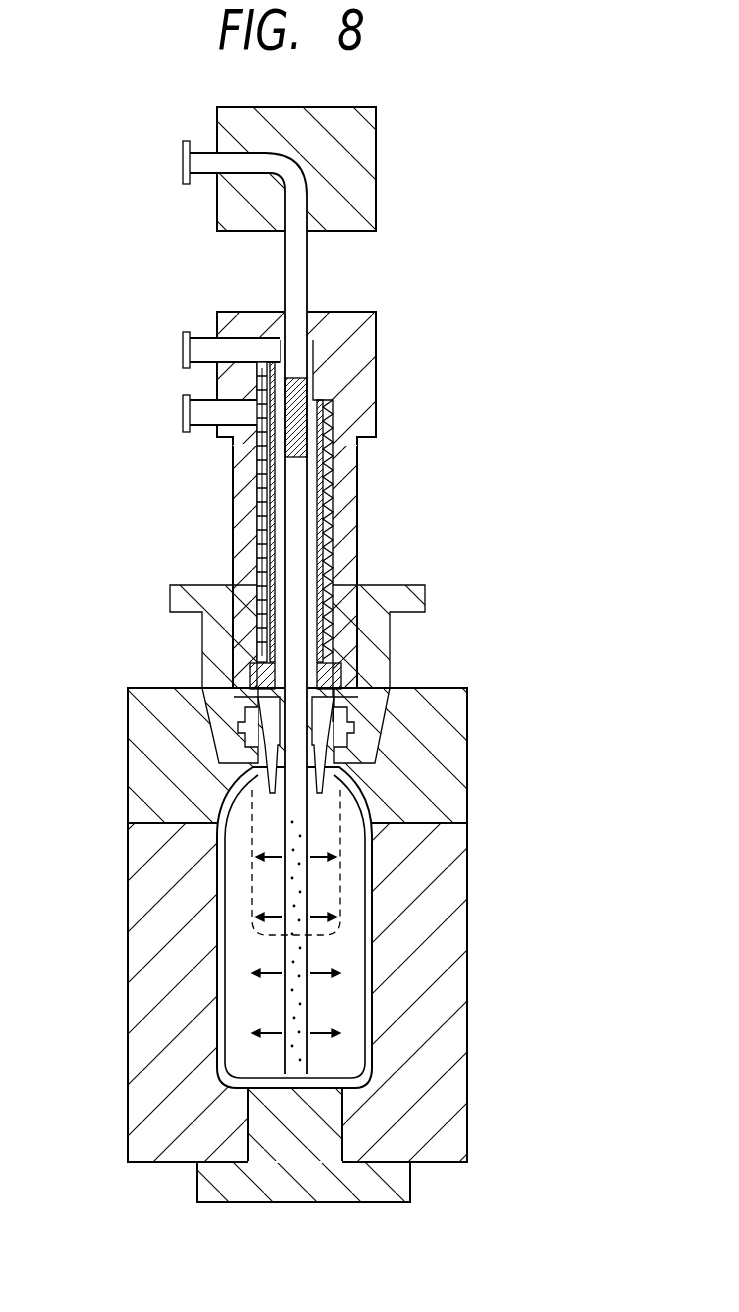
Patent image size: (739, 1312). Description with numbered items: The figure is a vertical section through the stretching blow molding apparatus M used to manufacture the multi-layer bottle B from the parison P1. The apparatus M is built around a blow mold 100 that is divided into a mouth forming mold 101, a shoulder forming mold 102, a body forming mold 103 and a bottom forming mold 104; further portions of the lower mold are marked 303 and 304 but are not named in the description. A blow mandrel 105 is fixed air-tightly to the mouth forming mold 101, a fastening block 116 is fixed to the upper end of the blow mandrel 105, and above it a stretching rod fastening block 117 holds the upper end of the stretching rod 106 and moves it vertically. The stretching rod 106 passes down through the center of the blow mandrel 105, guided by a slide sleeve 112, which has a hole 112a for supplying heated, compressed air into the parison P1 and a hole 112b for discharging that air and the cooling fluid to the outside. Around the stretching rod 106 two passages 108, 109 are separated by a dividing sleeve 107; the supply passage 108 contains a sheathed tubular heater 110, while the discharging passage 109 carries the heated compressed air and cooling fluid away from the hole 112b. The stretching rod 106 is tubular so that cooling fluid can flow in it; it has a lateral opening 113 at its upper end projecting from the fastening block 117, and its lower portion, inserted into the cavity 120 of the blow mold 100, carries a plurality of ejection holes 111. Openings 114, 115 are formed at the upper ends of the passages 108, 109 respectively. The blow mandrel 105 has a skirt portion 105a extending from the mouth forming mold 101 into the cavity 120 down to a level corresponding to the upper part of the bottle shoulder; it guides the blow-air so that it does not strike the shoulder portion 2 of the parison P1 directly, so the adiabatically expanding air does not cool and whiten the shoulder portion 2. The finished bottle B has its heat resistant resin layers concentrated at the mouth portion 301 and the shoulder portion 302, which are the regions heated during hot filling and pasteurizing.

The blow mold 100 is at (468, 890).
The mouth forming mold 101 is at (392, 643).
The shoulder forming mold 102 is at (470, 708).
The body forming mold 103 is at (138, 1147).
The bottom forming mold 104 is at (207, 1183).
The blow mandrel 105 is at (357, 537).
The skirt portion 105a is at (335, 795).
The stretching rod 106 is at (280, 893).
The dividing sleeve 107 is at (333, 490).
The passage 108 is at (265, 478).
The passage 109 is at (262, 503).
The sheathed tubular heater 110 is at (262, 530).
The ejection holes 111 is at (297, 1013).
The slide sleeve 112 is at (307, 653).
The hole 112a is at (248, 675).
The hole 112b is at (341, 677).
The opening 113 is at (183, 170).
The opening 114 is at (183, 352).
The opening 115 is at (183, 418).
The fastening block 116 is at (378, 347).
The stretching rod fastening block 117 is at (378, 137).
The cavity 120 is at (351, 1016).
The shoulder portion 2 is at (233, 793).
The mouth portion 301 is at (345, 716).
The shoulder portion 302 is at (350, 772).
The lower mold cavity block 303 is at (375, 947).
The bottom mold insert 304 is at (342, 1108).
The bottle B is at (377, 815).
The stretching blow molding apparatus M is at (492, 512).
The parison P1 is at (250, 887).